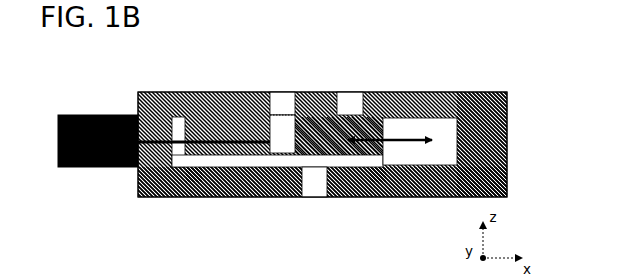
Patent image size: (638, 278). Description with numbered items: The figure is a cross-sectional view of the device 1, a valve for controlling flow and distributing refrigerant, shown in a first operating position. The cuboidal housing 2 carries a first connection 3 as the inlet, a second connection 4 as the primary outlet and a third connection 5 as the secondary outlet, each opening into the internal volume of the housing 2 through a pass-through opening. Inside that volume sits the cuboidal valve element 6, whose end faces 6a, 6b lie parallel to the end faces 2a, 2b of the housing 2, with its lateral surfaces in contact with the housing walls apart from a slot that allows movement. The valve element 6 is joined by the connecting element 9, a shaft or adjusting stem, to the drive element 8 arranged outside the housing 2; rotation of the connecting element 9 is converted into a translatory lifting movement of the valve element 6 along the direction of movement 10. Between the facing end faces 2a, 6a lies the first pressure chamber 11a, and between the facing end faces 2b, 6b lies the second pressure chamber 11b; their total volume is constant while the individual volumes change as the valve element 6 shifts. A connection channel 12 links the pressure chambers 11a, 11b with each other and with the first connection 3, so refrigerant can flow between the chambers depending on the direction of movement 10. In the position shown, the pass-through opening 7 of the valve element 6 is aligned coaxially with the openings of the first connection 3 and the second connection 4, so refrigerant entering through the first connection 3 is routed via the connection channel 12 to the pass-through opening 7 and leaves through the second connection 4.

The device 1 is at (517, 88).
The housing 2 is at (155, 107).
The first end face of the housing 2a is at (172, 163).
The second end face of the housing 2b is at (458, 142).
The first connection 3 is at (315, 187).
The second connection 4 is at (285, 102).
The third connection 5 is at (352, 102).
The valve element 6 is at (318, 138).
The first end face of the valve element 6a is at (196, 156).
The second end face of the valve element 6b is at (383, 147).
The pass-through opening 7 is at (283, 137).
The drive element 8 is at (80, 115).
The connecting element 9 is at (168, 143).
The direction of movement 10 is at (400, 137).
The first pressure chamber 11a is at (177, 128).
The second pressure chamber 11b is at (439, 128).
The connection channel 12 is at (240, 162).